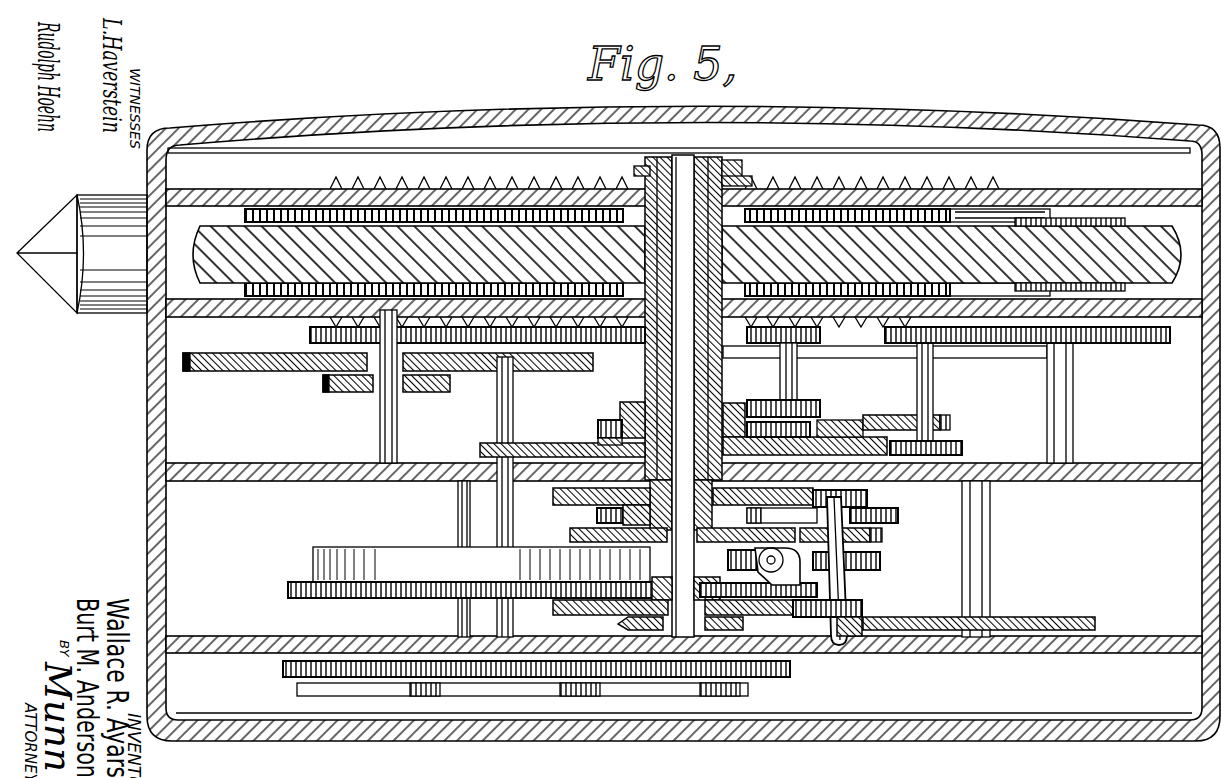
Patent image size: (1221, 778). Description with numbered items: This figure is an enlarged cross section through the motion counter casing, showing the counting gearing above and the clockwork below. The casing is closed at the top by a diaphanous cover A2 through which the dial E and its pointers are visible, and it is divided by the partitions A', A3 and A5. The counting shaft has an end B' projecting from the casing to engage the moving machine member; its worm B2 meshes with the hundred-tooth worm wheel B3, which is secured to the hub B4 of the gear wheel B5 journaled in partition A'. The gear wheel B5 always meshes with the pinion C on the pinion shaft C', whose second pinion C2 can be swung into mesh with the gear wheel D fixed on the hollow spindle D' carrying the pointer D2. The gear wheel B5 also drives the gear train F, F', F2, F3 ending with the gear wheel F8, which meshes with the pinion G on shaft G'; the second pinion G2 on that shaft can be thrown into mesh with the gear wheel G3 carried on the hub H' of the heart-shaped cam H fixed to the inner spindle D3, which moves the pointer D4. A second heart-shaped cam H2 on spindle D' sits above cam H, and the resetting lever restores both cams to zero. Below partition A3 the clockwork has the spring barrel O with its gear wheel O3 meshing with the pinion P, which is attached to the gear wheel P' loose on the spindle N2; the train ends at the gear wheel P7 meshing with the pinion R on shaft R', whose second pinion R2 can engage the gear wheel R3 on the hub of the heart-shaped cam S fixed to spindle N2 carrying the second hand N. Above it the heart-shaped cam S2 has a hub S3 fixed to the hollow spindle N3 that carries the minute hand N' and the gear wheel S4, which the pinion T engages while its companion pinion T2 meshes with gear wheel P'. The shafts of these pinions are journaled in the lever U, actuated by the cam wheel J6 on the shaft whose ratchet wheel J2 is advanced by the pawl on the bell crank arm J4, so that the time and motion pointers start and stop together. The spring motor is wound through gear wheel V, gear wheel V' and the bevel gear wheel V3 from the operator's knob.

The partition A' is at (684, 321).
The cover A2 is at (527, 112).
The partition A3 is at (1120, 481).
The partition A5 is at (1120, 653).
The shaft end B' is at (82, 267).
The worm B2 is at (456, 184).
The worm wheel B3 is at (230, 240).
The hub B4 is at (762, 184).
The gear wheel B5 is at (737, 358).
The pinion C is at (794, 334).
The pinion shaft C' is at (800, 371).
The second pinion C2 is at (820, 405).
The gear wheel D is at (805, 419).
The hollow shaft or spindle D' is at (634, 381).
The pointer D2 is at (740, 176).
The hollow shaft or spindle D3 is at (652, 366).
The pointer D4 is at (641, 166).
The dial E is at (872, 189).
The gear wheel F is at (464, 334).
The gear wheel F' is at (462, 386).
The gear wheel F2 is at (200, 371).
The gear wheel F3 is at (336, 392).
The gear wheel F8 is at (1100, 343).
The pinion G is at (968, 403).
The pinion shaft G' is at (914, 392).
The second pinion G2 is at (962, 447).
The gear wheel G3 is at (538, 443).
The heart-shaped cam H is at (598, 428).
The hub H' is at (589, 433).
The heart-shaped cam H2 is at (652, 394).
The ratchet wheel J2 is at (880, 563).
The arm of bell crank lever J4 is at (758, 593).
The cam wheel J6 is at (782, 516).
The pointer or hand N is at (699, 298).
The pointer or hand N' is at (718, 328).
The shaft or spindle N2 is at (683, 125).
The hollow shaft or spindle N3 is at (664, 157).
The spring barrel O is at (422, 550).
The gear wheel O3 is at (288, 590).
The pinion P is at (627, 624).
The gear wheel P' is at (665, 596).
The gear wheel P7 is at (1075, 617).
The pinion R is at (839, 586).
The pinion shaft R' is at (871, 584).
The second pinion R2 is at (882, 537).
The gear wheel R3 is at (570, 536).
The heart-shaped cam S is at (690, 528).
The heart-shaped cam S2 is at (597, 516).
The hub S3 is at (657, 470).
The gear wheel S4 is at (553, 494).
The pinion T is at (867, 498).
The second pinion T2 is at (862, 605).
The lever U is at (898, 516).
The gear wheel V is at (523, 668).
The gear wheel V' is at (556, 678).
The bevel gear wheel V3 is at (743, 625).